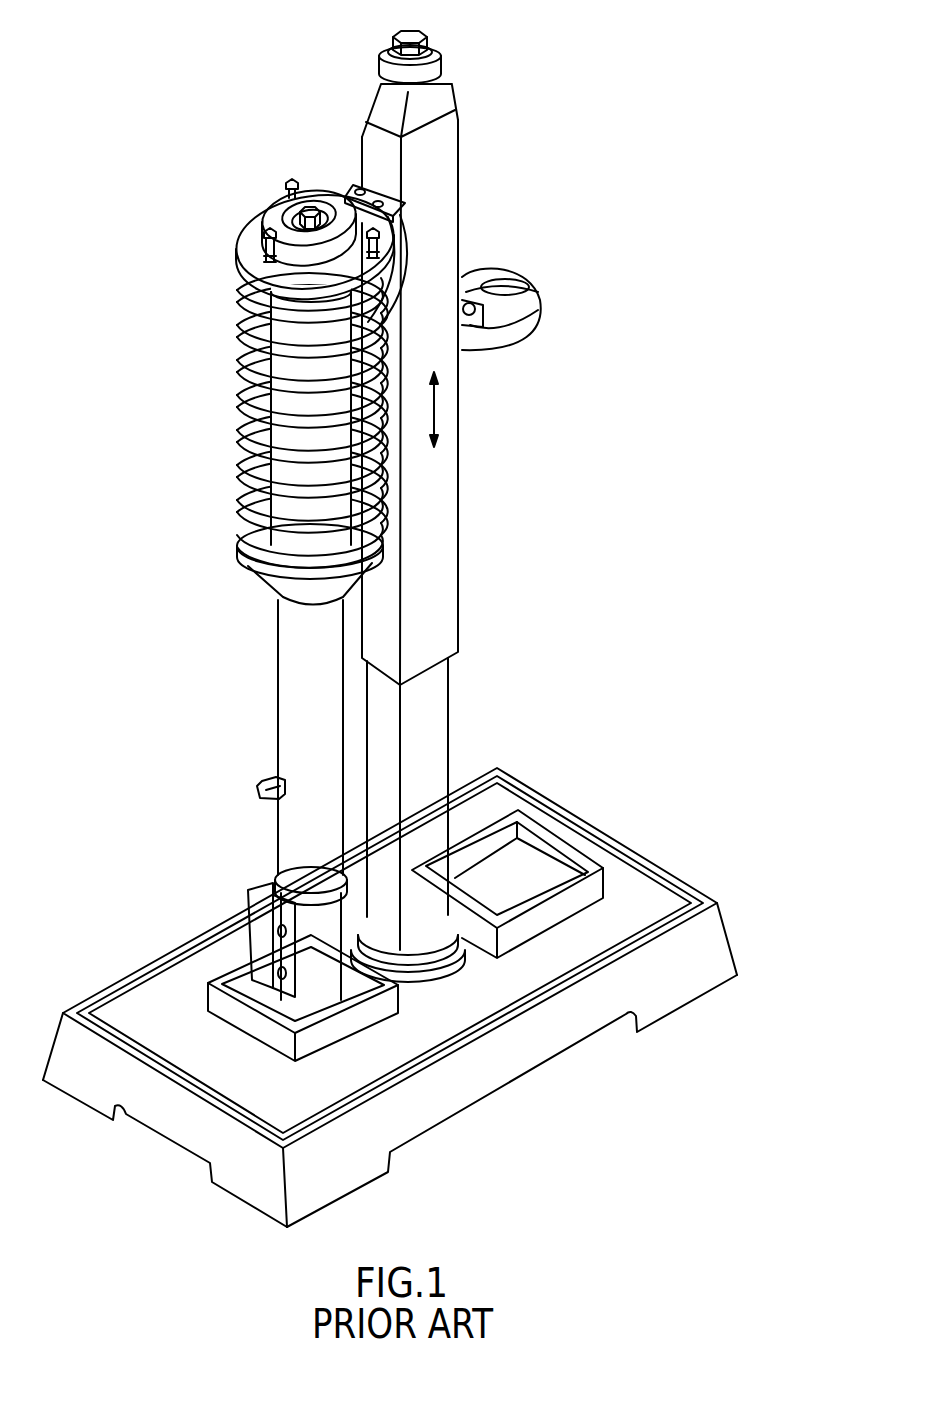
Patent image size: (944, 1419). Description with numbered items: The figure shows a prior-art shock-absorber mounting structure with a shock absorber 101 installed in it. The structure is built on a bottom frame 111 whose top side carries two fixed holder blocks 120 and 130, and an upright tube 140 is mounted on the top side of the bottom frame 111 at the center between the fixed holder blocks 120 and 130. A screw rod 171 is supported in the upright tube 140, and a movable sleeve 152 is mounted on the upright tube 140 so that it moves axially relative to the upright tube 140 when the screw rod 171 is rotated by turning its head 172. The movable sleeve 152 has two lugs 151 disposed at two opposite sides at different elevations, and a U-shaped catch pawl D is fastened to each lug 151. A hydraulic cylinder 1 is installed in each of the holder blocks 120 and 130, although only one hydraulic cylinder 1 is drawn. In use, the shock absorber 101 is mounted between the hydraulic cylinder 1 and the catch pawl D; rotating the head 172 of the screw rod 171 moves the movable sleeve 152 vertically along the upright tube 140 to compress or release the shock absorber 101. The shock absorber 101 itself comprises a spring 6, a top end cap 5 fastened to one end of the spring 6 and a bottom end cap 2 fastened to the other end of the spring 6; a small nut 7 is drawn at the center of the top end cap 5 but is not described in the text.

The hydraulic cylinder 1 is at (288, 663).
The bottom end cap 2 is at (282, 583).
The top end cap 5 is at (248, 238).
The spring 6 is at (243, 434).
The nut 7 is at (300, 212).
The shock absorber 101 is at (220, 343).
The bottom frame 111 is at (624, 840).
The fixed holder block 120 is at (240, 980).
The fixed holder block 130 is at (523, 857).
The upright tube 140 is at (438, 748).
The lug 151 is at (345, 190).
The movable sleeve 152 is at (448, 447).
The screw rod 171 is at (437, 166).
The head 172 is at (418, 38).
The U-shaped catch pawl D is at (393, 275).